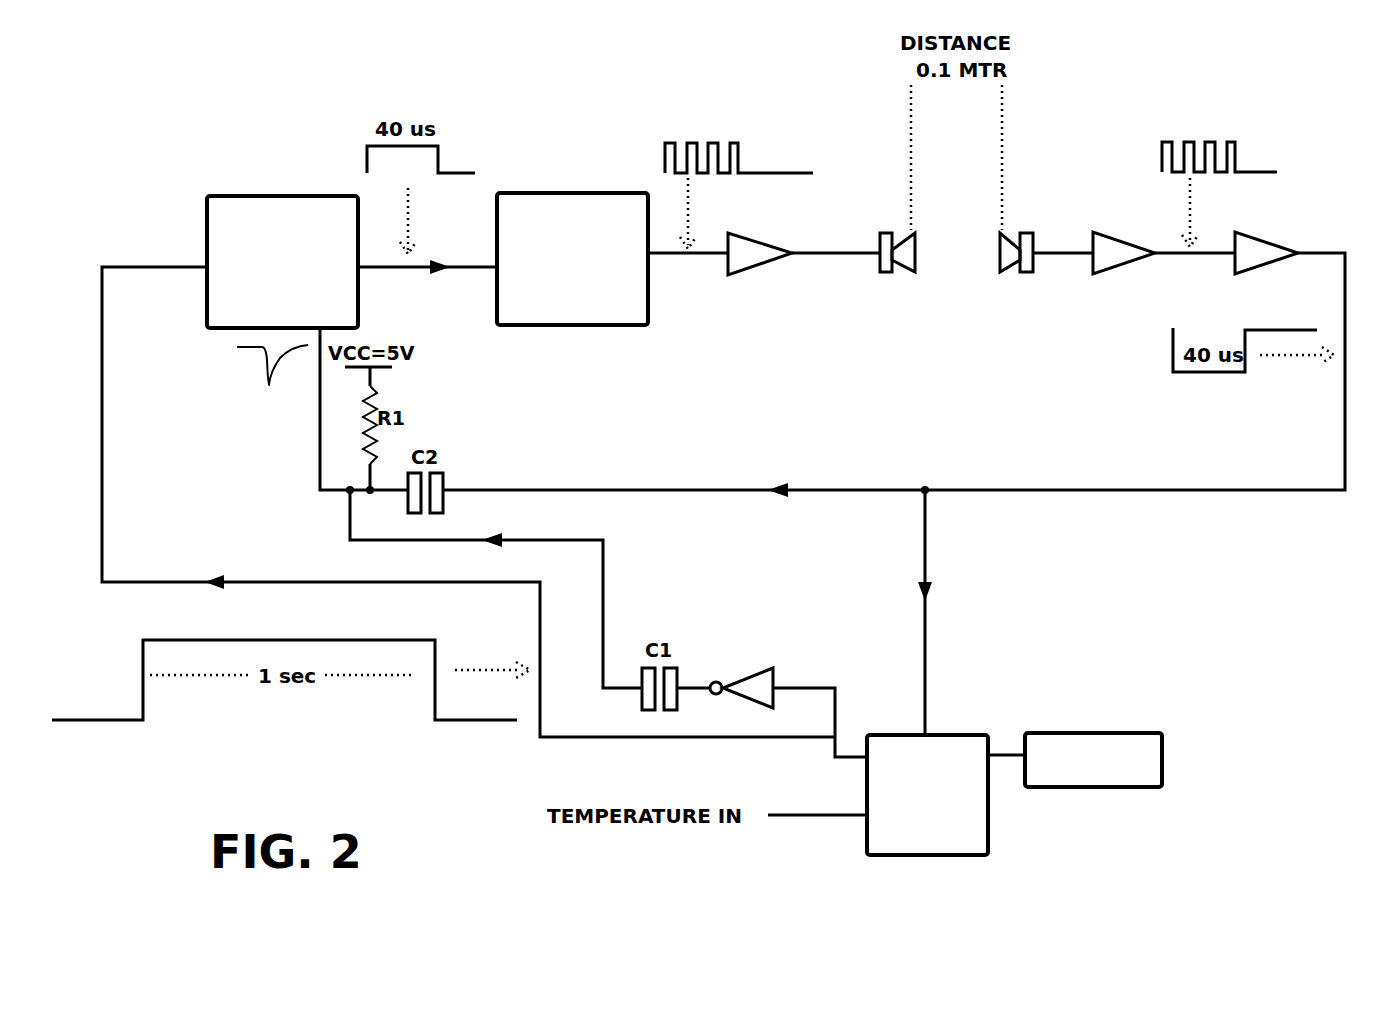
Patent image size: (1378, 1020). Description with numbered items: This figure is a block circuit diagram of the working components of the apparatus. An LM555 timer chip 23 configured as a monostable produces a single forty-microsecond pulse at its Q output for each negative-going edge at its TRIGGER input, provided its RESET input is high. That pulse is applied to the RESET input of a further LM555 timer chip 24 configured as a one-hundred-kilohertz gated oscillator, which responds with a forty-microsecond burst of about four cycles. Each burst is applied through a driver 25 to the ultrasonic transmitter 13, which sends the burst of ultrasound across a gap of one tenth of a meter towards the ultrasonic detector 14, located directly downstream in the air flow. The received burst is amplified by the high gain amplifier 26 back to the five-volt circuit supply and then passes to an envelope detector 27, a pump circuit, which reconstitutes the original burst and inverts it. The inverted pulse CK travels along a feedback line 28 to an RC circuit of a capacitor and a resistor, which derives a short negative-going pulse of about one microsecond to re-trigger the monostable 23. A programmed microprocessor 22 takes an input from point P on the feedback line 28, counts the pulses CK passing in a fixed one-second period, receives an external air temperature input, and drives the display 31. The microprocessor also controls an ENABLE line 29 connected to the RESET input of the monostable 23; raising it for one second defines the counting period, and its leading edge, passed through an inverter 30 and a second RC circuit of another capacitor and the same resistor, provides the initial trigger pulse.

The ultrasonic transmitter 13 is at (912, 266).
The ultrasonic detector 14 is at (1008, 260).
The programmed microprocessor 22 is at (957, 830).
The LM555 timer chip (monostable) 23 is at (233, 233).
The LM555 timer chip (100 KHz gated oscillator) 24 is at (512, 207).
The driver 25 is at (754, 252).
The high gain amplifier 26 is at (1113, 257).
The envelope detector (pump circuit) 27 is at (1258, 252).
The feedback line 28 is at (1068, 491).
The ENABLE line 29 is at (591, 738).
The inverter 30 is at (757, 683).
The display 31 is at (1128, 740).